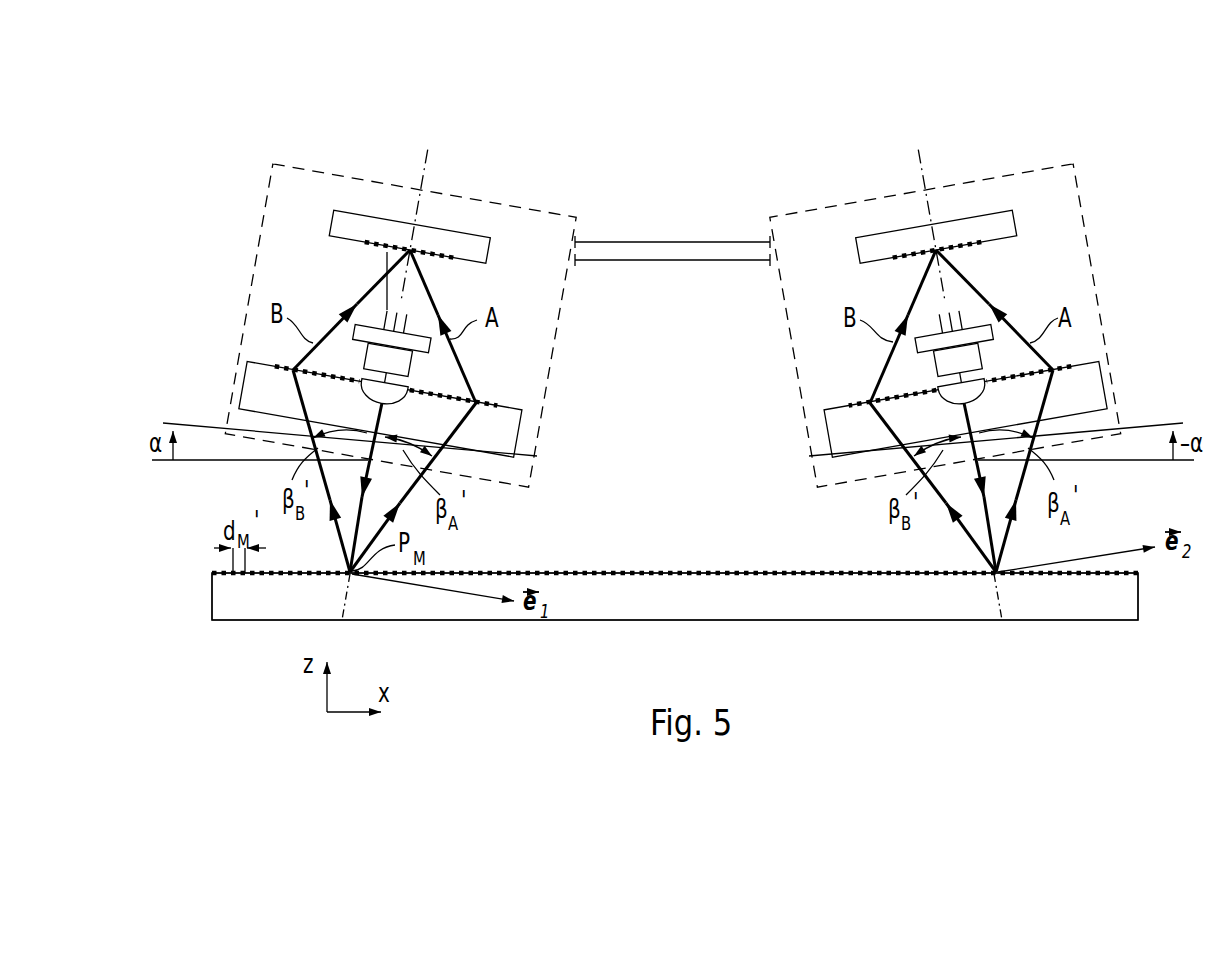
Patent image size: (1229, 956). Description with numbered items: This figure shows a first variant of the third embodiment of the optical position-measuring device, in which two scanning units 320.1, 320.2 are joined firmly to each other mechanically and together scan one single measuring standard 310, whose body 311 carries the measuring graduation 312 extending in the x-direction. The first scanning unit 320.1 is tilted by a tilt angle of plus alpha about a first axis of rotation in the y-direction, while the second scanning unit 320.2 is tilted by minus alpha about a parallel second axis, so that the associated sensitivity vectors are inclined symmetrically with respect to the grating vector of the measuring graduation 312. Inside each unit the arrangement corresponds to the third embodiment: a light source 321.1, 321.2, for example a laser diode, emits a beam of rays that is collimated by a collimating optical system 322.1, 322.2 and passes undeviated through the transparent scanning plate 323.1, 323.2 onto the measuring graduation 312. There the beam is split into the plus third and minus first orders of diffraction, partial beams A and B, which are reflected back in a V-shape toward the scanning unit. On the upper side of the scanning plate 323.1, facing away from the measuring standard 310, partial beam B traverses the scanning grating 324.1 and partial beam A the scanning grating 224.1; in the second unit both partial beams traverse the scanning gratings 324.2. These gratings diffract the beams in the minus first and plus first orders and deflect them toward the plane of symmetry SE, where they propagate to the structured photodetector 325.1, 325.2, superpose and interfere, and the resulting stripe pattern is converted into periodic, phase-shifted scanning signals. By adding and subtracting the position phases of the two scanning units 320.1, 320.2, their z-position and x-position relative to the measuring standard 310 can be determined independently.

The first scanning unit 320.1 is at (238, 230).
The second scanning unit 320.2 is at (784, 204).
The light source 321.1 is at (363, 331).
The light source 321.2 is at (988, 330).
The collimating optical system 322.1 is at (365, 398).
The collimating optical system 322.2 is at (980, 397).
The scanning plate 323.1 is at (513, 437).
The scanning plate 323.2 is at (835, 442).
The scanning grating 324.1 is at (273, 366).
The scanning gratings 324.2 is at (1073, 368).
The scanning grating 224.1 is at (497, 405).
The structured photodetector 325.1 is at (493, 242).
The structured photodetector 325.2 is at (860, 245).
The measuring standard 310 is at (226, 642).
The scale carrier (311') 311 is at (1127, 593).
The measuring graduation 312 is at (213, 573).
The plane of symmetry SE is at (428, 172).